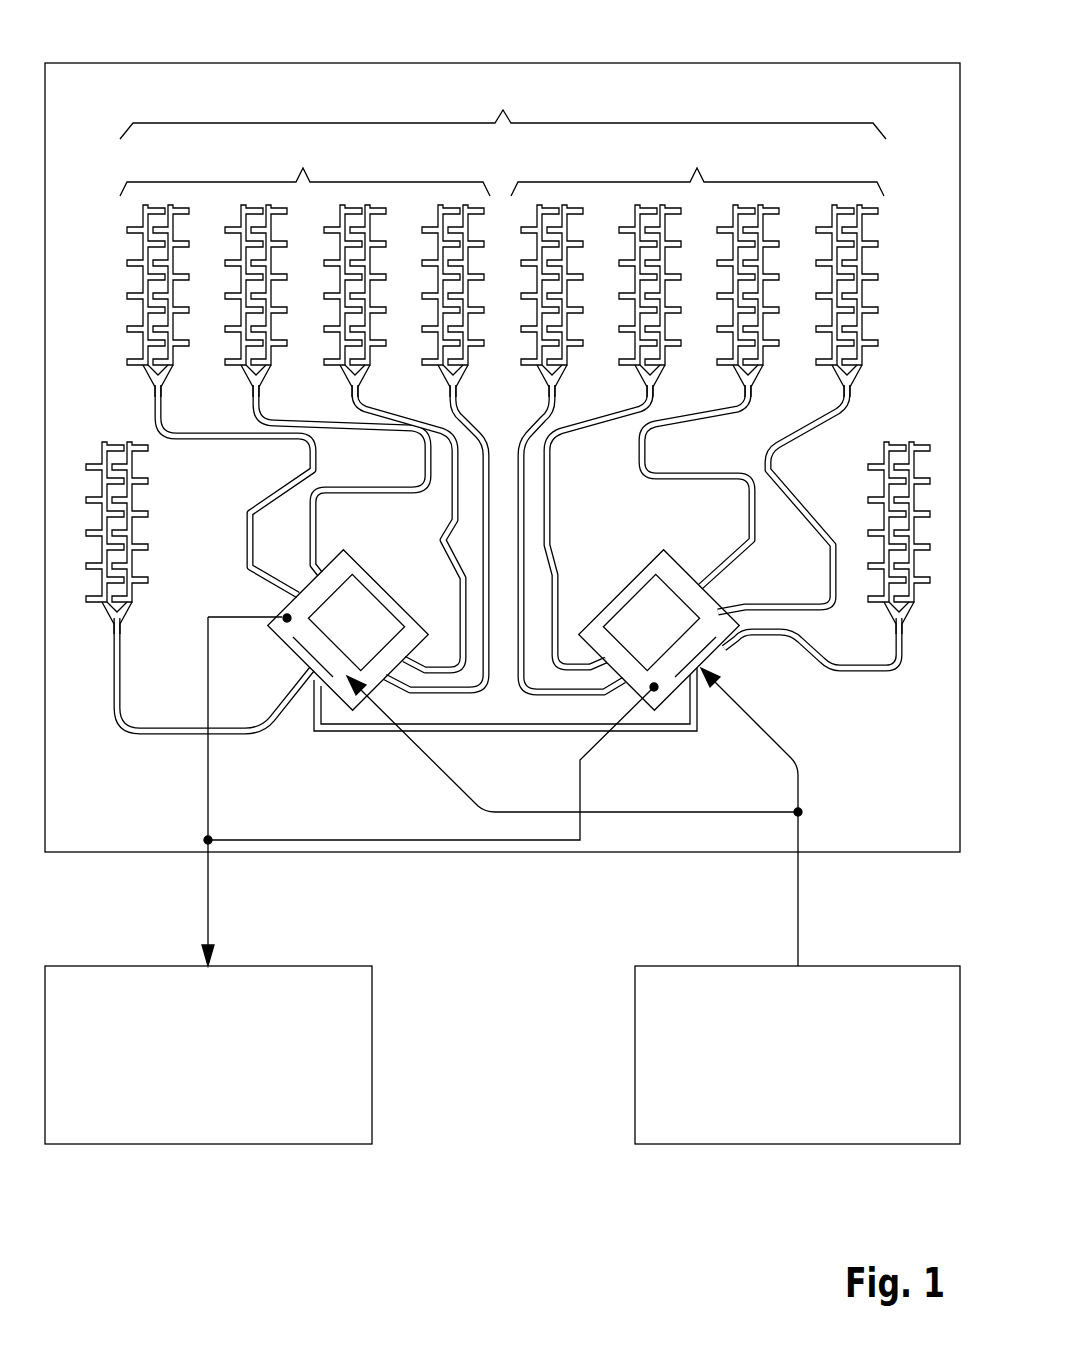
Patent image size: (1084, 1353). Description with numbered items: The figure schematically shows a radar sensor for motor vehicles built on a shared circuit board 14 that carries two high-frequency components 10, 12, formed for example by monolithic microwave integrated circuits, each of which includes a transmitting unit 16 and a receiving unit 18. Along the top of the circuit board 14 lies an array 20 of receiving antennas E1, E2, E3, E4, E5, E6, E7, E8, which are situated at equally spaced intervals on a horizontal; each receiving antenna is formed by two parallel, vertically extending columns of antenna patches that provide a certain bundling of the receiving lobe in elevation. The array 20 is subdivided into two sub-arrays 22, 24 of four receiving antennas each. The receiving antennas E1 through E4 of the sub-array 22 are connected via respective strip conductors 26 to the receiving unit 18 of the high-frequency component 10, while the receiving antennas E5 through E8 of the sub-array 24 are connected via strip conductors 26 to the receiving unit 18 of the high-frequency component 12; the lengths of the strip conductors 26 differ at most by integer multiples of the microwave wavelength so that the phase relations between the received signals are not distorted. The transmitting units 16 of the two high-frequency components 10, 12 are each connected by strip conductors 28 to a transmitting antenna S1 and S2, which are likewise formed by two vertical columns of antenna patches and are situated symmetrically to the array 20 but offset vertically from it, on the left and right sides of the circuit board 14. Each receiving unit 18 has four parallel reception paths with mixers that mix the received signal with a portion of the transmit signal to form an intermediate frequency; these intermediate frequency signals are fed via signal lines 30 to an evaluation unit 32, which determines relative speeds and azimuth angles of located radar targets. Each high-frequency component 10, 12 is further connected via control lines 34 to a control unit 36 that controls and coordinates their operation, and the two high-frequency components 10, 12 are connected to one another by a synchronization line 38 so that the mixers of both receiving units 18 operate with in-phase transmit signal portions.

The high-frequency component 10 is at (363, 570).
The high-frequency component 12 is at (650, 565).
The circuit board 14 is at (752, 63).
The transmitting unit 16 is at (310, 645).
The receiving unit 18 is at (368, 612).
The array 20 is at (503, 109).
The sub-array 22 is at (305, 166).
The sub-array 24 is at (697, 166).
The strip conductors 26 is at (205, 440).
The strip conductors 28 is at (862, 672).
The signal lines 30 is at (208, 890).
The evaluation unit 32 is at (357, 1012).
The control lines 34 is at (800, 903).
The control unit 36 is at (635, 1112).
The synchronization line 38 is at (510, 733).
The receiving antenna E1 is at (143, 372).
The receiving antenna E2 is at (241, 372).
The receiving antenna E3 is at (340, 372).
The receiving antenna E4 is at (438, 372).
The receiving antenna E5 is at (537, 372).
The receiving antenna E6 is at (635, 372).
The receiving antenna E7 is at (733, 372).
The receiving antenna E8 is at (832, 372).
The transmitting antenna S1 is at (132, 606).
The transmitting antenna S2 is at (884, 608).